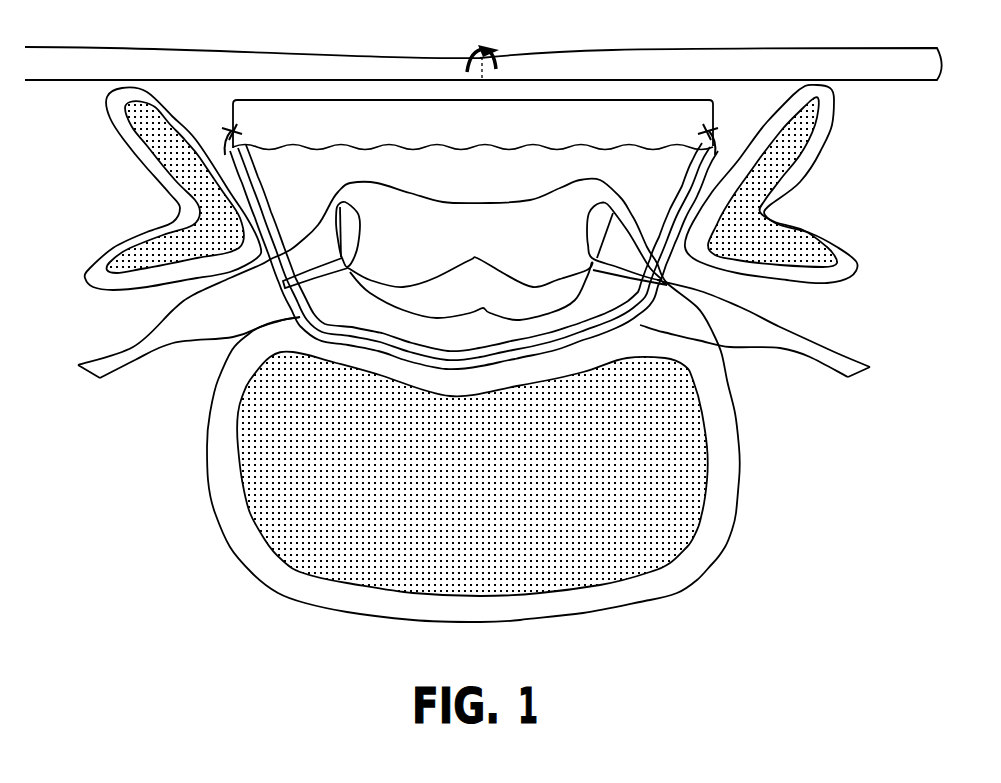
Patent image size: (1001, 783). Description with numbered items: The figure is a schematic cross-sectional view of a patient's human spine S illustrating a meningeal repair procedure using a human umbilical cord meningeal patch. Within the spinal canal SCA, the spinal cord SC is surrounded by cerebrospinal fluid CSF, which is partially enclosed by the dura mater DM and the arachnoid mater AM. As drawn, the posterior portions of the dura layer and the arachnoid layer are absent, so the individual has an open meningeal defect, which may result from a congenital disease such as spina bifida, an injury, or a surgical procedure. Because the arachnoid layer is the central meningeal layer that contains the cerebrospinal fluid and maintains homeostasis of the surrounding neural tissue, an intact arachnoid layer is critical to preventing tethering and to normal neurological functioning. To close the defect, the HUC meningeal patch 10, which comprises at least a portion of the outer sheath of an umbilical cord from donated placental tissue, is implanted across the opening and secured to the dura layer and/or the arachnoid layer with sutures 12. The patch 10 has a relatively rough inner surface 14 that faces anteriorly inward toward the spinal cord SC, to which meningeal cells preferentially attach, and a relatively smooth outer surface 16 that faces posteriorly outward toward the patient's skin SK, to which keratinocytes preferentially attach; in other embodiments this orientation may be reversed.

The HUC meningeal patch 10 is at (372, 137).
The sutures 12 is at (225, 135).
The inner surface 14 is at (497, 147).
The outer surface 16 is at (417, 100).
The skin SK is at (615, 58).
The human spine S is at (737, 597).
The spinal cord SC is at (490, 251).
The spinal canal SCA is at (343, 305).
The cerebrospinal fluid CSF is at (465, 185).
The dura mater DM is at (266, 208).
The arachnoid mater AM is at (666, 212).